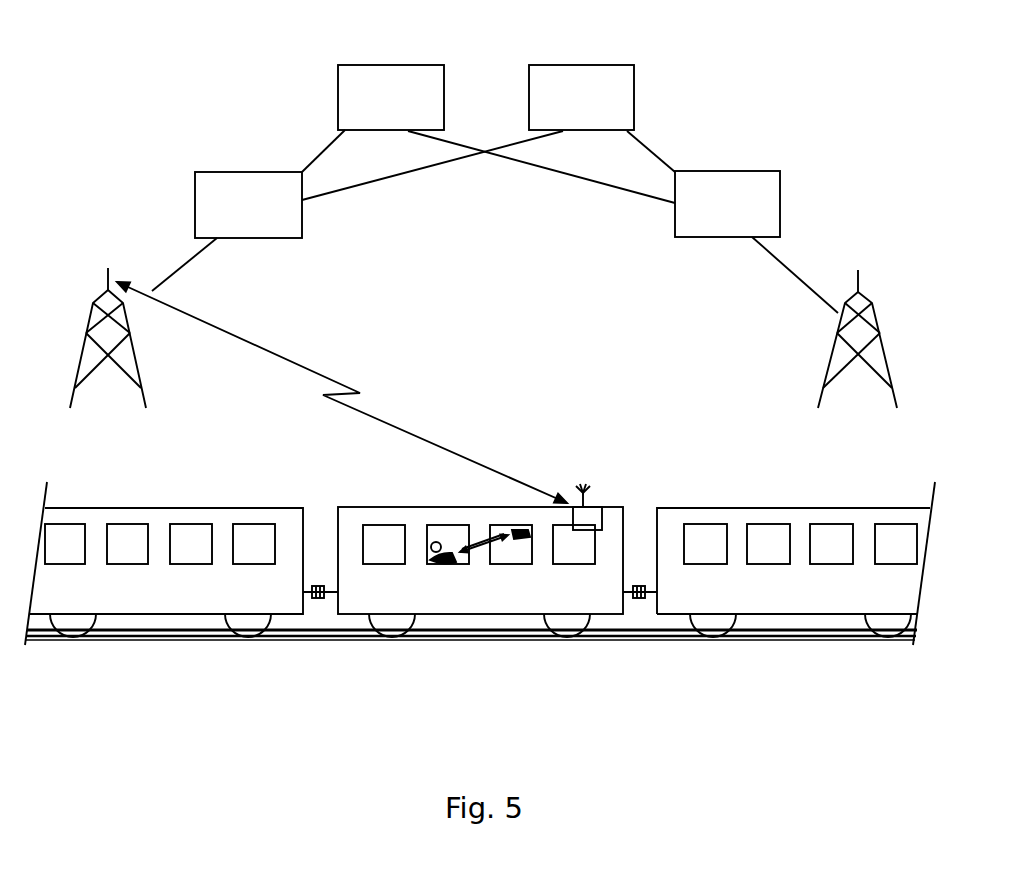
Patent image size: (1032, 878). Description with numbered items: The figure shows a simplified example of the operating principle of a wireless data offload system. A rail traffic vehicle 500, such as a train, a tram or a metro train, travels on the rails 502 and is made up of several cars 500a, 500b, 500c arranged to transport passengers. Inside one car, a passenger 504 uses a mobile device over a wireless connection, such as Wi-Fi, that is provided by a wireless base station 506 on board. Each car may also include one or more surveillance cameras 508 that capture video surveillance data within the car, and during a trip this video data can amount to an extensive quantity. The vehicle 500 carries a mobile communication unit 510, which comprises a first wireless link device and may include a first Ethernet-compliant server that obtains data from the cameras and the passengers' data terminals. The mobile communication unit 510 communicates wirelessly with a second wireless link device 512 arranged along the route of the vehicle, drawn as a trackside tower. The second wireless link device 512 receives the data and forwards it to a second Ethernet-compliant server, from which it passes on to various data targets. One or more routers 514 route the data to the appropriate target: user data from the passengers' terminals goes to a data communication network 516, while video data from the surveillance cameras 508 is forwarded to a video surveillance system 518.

The rail traffic vehicle 500 is at (480, 541).
The car 500a is at (162, 520).
The car 500b is at (617, 538).
The car 500c is at (802, 518).
The rails 502 is at (442, 635).
The passenger 504 is at (436, 532).
The wireless base station 506 is at (520, 528).
The surveillance camera 508 is at (369, 531).
The mobile communication unit 510 is at (607, 480).
The second wireless link device 512 is at (92, 308).
The router 514 is at (215, 178).
The data communication network 516 is at (352, 70).
The video surveillance system 518 is at (623, 78).